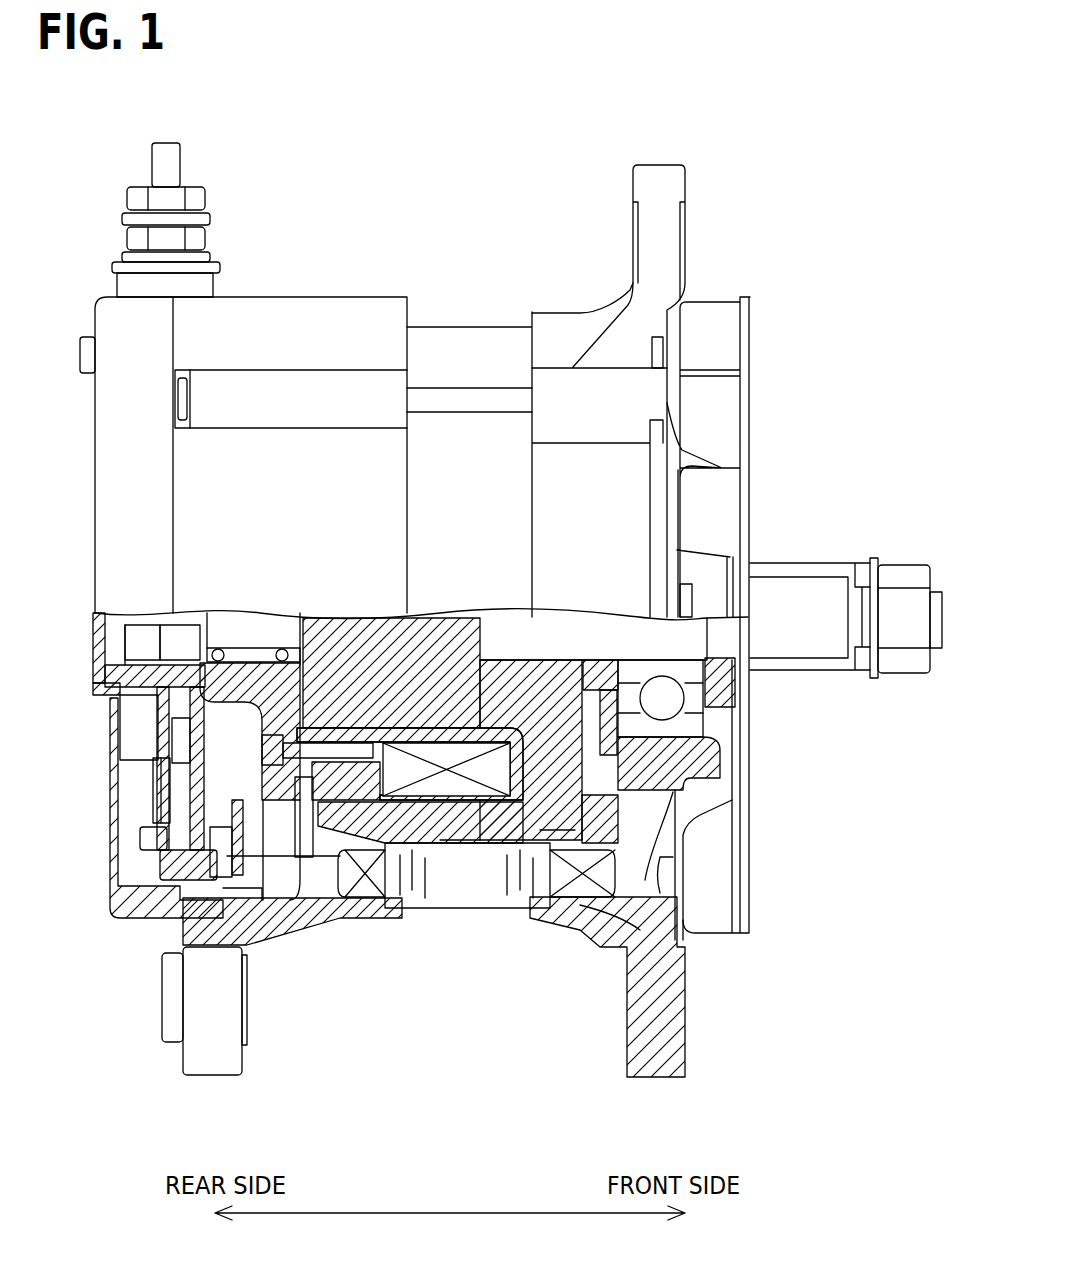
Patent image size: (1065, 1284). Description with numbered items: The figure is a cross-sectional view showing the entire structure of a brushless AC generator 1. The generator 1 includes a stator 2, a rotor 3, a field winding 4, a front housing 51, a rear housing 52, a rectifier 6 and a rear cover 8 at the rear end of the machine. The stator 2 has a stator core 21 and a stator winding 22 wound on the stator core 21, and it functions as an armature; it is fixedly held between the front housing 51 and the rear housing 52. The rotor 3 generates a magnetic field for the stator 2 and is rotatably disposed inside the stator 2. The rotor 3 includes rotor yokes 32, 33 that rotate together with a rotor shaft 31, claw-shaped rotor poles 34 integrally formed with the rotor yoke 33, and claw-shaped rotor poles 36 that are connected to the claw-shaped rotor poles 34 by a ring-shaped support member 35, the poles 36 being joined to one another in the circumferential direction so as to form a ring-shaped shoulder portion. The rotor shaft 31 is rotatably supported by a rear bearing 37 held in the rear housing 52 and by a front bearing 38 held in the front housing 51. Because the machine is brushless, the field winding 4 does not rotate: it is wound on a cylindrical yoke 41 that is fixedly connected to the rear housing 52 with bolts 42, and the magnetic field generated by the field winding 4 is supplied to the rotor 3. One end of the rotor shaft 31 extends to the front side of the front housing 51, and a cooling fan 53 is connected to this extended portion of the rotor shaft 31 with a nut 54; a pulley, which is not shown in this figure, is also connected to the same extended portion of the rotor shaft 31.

The brushless AC generator 1 is at (752, 156).
The stator 2 is at (491, 924).
The rotor 3 is at (603, 806).
The field winding 4 is at (497, 780).
The rectifier 6 is at (140, 785).
The rear cover 8 is at (120, 912).
The stator core 21 is at (440, 887).
The stator winding 22 is at (582, 880).
The rotor shaft 31 is at (678, 645).
The rotor yoke 32 is at (378, 643).
The rotor yoke 33 is at (600, 728).
The claw-shaped rotor poles 34 is at (533, 805).
The ring-shaped support member 35 is at (460, 832).
The claw-shaped rotor poles 36 is at (390, 822).
The rear bearing 37 is at (250, 655).
The front bearing 38 is at (718, 693).
The cylindrical yoke 41 is at (338, 817).
The bolts 42 is at (342, 745).
The front housing 51 is at (668, 253).
The rear housing 52 is at (282, 913).
The cooling fan 53 is at (743, 873).
The nut 54 is at (905, 577).